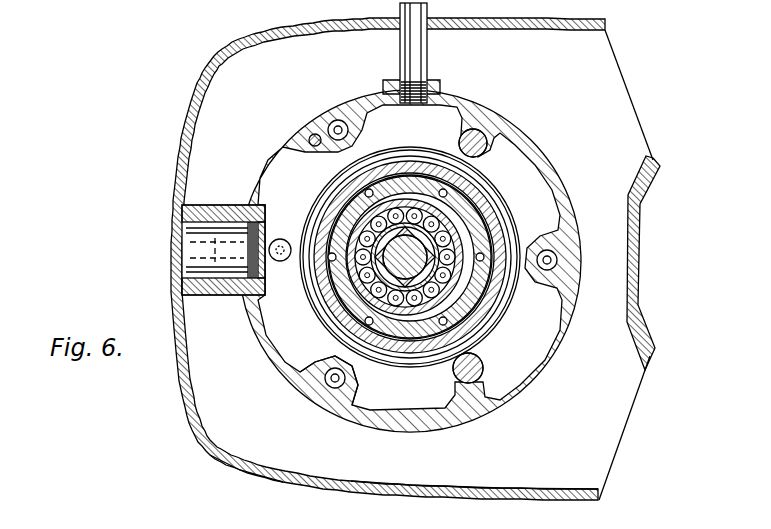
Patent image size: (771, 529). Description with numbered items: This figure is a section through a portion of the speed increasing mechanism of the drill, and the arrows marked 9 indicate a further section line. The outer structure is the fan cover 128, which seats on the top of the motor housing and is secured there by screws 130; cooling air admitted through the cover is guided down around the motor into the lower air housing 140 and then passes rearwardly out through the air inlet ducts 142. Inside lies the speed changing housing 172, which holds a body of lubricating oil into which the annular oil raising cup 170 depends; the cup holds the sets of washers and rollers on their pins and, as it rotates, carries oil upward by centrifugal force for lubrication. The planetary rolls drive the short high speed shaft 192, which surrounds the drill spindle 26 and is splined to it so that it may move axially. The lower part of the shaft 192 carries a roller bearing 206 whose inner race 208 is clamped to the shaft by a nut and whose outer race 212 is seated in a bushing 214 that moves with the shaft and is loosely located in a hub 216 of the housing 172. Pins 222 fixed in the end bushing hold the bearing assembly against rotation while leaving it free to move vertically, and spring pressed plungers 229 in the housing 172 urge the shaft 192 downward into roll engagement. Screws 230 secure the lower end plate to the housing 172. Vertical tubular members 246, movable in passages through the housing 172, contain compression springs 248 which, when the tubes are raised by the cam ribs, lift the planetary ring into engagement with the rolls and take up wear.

The section line 9- 9 is at (412, 10).
The drill spindle 26 is at (472, 250).
The fan cover 128 is at (684, 520).
The screws 130 is at (185, 492).
The lower air housing 140 is at (538, 497).
The air inlet ducts 142 is at (627, 118).
The oil raising cup 170 is at (452, 284).
The speed changing housing 172 is at (256, 350).
The high speed shaft 192 is at (466, 268).
The roller bearing 206 is at (327, 222).
The inner race 208 is at (331, 309).
The outer race 212 is at (462, 228).
The bushing 214 is at (333, 332).
The hub 216 is at (480, 306).
The pins 222 is at (460, 196).
The spring pressed plungers 229 is at (520, 238).
The screws 230 is at (279, 262).
The tubular members 246 is at (333, 390).
The compression springs 248 is at (356, 386).